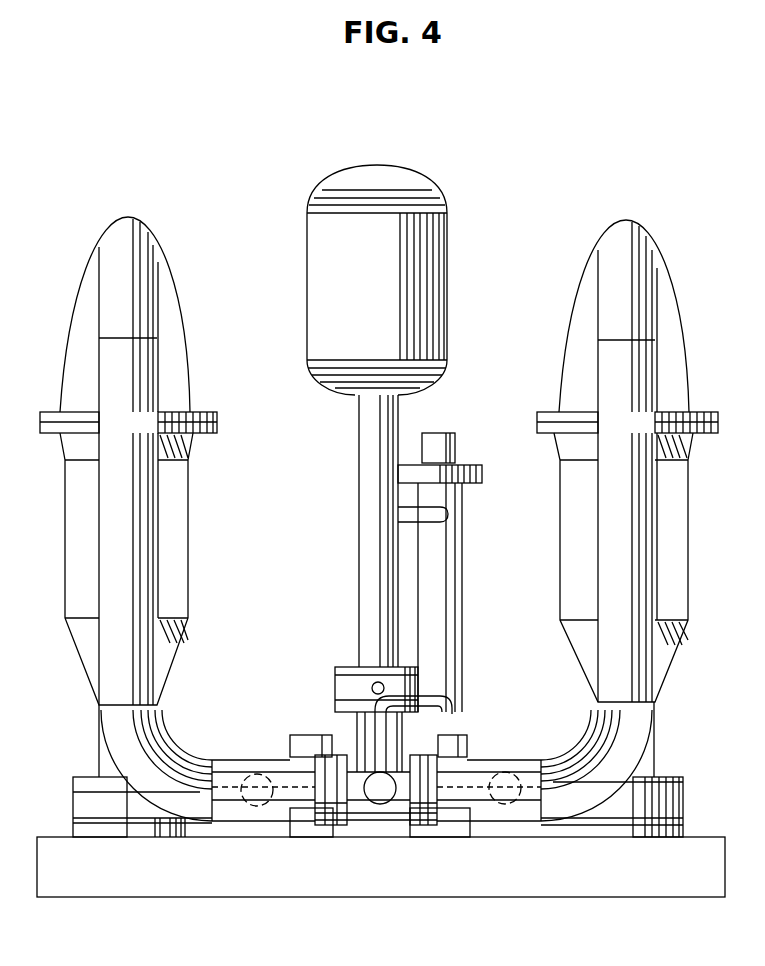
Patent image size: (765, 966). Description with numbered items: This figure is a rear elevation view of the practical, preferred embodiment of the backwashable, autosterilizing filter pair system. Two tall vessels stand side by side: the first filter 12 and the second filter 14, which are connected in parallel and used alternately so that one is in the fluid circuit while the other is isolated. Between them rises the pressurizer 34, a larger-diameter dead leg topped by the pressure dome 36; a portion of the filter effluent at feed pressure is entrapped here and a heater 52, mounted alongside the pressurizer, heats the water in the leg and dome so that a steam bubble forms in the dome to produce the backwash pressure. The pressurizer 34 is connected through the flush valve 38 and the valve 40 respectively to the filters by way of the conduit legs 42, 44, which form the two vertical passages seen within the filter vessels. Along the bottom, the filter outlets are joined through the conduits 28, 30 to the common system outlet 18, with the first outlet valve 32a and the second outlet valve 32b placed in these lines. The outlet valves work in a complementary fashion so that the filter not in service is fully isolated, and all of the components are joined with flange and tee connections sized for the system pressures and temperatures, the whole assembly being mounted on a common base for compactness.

The first filter 12 is at (670, 592).
The second filter 14 is at (170, 560).
The system outlet 18 is at (383, 804).
The conduit 28 is at (482, 795).
The conduit 30 is at (283, 795).
The first outlet valve 32a is at (425, 752).
The second outlet valve 32b is at (329, 752).
The pressurizer 34 is at (367, 441).
The pressure dome 36 is at (389, 283).
The flush valve 38 is at (448, 758).
The valve 40 is at (304, 744).
The conduit leg 42 is at (637, 551).
The conduit leg 44 is at (139, 534).
The heater 52 is at (445, 597).